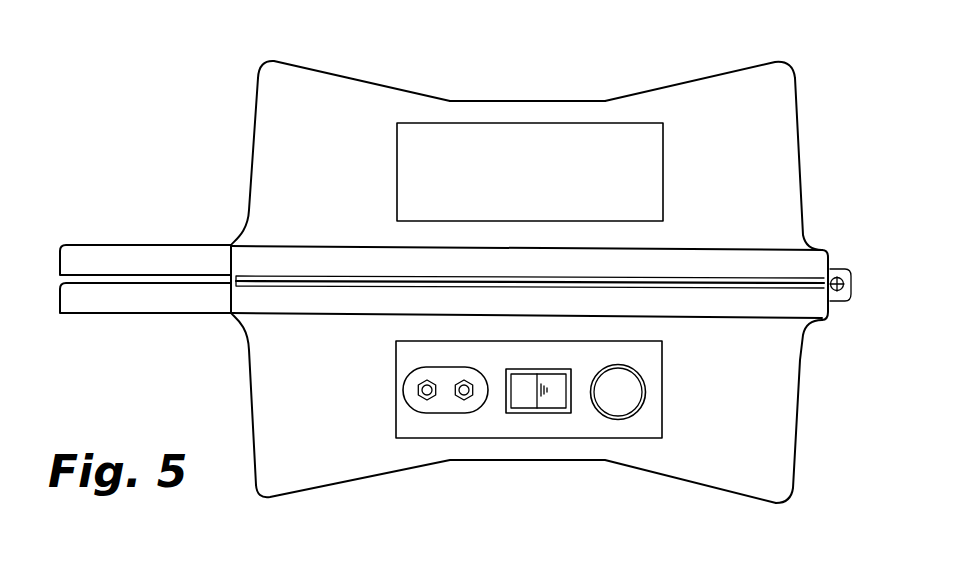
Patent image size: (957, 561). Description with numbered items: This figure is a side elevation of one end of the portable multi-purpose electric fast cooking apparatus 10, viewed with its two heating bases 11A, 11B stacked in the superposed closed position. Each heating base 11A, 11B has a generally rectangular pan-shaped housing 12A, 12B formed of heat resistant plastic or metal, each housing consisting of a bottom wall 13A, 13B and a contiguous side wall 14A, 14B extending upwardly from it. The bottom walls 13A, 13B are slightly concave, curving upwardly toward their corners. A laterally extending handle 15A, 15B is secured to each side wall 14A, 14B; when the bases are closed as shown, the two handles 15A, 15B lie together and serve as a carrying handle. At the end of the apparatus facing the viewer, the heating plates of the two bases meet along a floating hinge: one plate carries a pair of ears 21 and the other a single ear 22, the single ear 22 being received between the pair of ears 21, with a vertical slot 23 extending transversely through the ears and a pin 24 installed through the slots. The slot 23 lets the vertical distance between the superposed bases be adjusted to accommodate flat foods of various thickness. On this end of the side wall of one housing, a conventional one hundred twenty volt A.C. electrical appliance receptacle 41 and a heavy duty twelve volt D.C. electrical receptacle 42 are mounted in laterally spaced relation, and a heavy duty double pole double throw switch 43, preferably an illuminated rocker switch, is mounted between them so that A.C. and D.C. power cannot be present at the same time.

The portable multi-purpose electric fast cooking apparatus 10 is at (554, 84).
The heating base 11A is at (250, 137).
The pan-shaped housing 12A is at (262, 180).
The bottom wall 13A is at (468, 100).
The side wall 14A is at (787, 122).
The heating base 11B is at (240, 348).
The pan-shaped housing 12B is at (253, 410).
The bottom wall 13B is at (481, 461).
The side wall 14B is at (786, 413).
The handle 15A is at (60, 257).
The handle 15B is at (62, 297).
The pair of ears 21 is at (845, 302).
The single ear 22 is at (838, 332).
The vertical slot 23 is at (832, 268).
The pin 24 is at (544, 240).
The A.C. electrical appliance receptacle 41 is at (442, 403).
The D.C. electrical receptacle 42 is at (630, 390).
The DPDT switch 43 is at (551, 398).